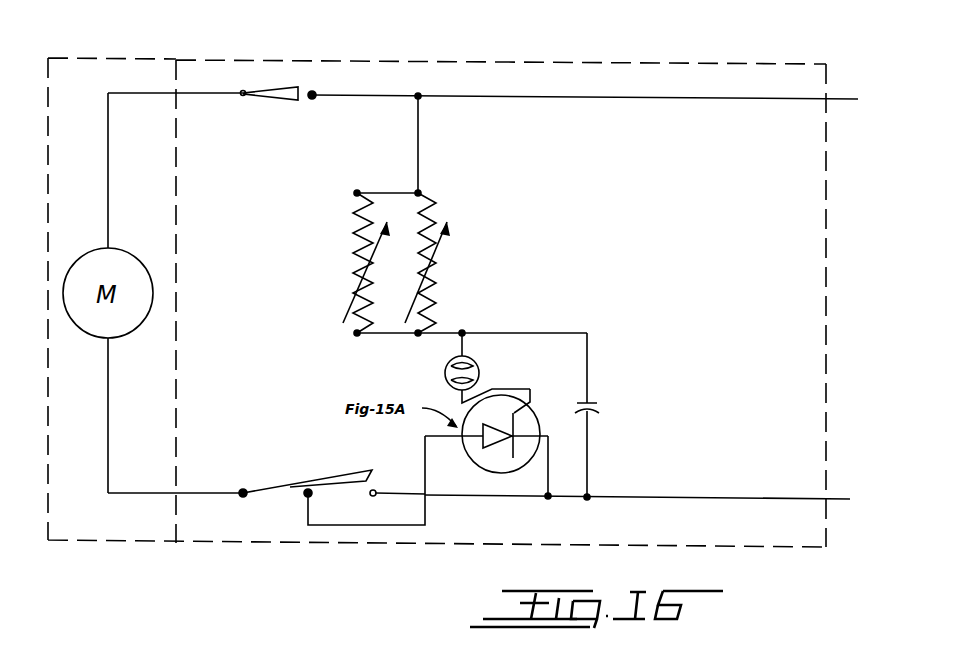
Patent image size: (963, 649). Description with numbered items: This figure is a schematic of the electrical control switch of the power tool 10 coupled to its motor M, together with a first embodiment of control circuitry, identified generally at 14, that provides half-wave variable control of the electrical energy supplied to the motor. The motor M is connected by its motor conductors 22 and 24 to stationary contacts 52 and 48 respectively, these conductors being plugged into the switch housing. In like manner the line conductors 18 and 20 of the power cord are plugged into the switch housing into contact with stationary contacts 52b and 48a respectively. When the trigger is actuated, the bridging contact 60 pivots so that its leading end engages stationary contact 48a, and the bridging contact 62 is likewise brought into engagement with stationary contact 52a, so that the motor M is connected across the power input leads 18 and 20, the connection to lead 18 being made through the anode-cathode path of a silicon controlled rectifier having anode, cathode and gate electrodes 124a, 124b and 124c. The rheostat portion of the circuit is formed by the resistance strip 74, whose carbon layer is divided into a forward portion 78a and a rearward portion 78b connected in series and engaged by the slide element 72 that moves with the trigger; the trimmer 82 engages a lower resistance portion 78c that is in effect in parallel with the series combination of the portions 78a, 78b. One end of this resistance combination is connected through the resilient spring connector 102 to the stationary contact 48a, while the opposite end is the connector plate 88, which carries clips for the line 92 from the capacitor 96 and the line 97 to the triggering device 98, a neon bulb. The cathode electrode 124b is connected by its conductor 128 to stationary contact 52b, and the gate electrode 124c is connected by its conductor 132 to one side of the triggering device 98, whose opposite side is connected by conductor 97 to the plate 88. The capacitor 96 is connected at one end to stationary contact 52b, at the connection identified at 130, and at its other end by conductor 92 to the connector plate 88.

The tool 10 is at (93, 543).
The control circuit enclosure 14 is at (742, 58).
The line conductor 18 is at (478, 499).
The line conductor 20 is at (316, 99).
The motor conductor 22 is at (229, 496).
The motor conductor 24 is at (243, 97).
The stationary contact 48 is at (243, 91).
The stationary contact 48a is at (315, 90).
The bridging contact 60 is at (277, 88).
The stationary contact 52 is at (243, 490).
The stationary contact 52a is at (310, 497).
The stationary contact 52b is at (393, 486).
The bridging contact 62 is at (308, 479).
The slide element 72 is at (445, 242).
The resistance strip 74 is at (440, 270).
The forward portion of resistance strip 78a is at (437, 213).
The rearward portion of resistance strip 78b is at (437, 307).
The lower portion of resistance strip 78c is at (353, 258).
The trimmer 82 is at (357, 293).
The connector plate 88 is at (462, 333).
The conductor 92 is at (587, 353).
The capacitor 96 is at (598, 406).
The conductor 97 is at (462, 341).
The triggering device 98 is at (480, 371).
The resilient connector 102 is at (418, 138).
The anode electrode 124a is at (520, 437).
The cathode electrode 124b is at (450, 440).
The gate electrode 124c is at (531, 389).
The conductor 128 is at (550, 458).
The junction 130 is at (587, 475).
The conductor 132 is at (450, 394).